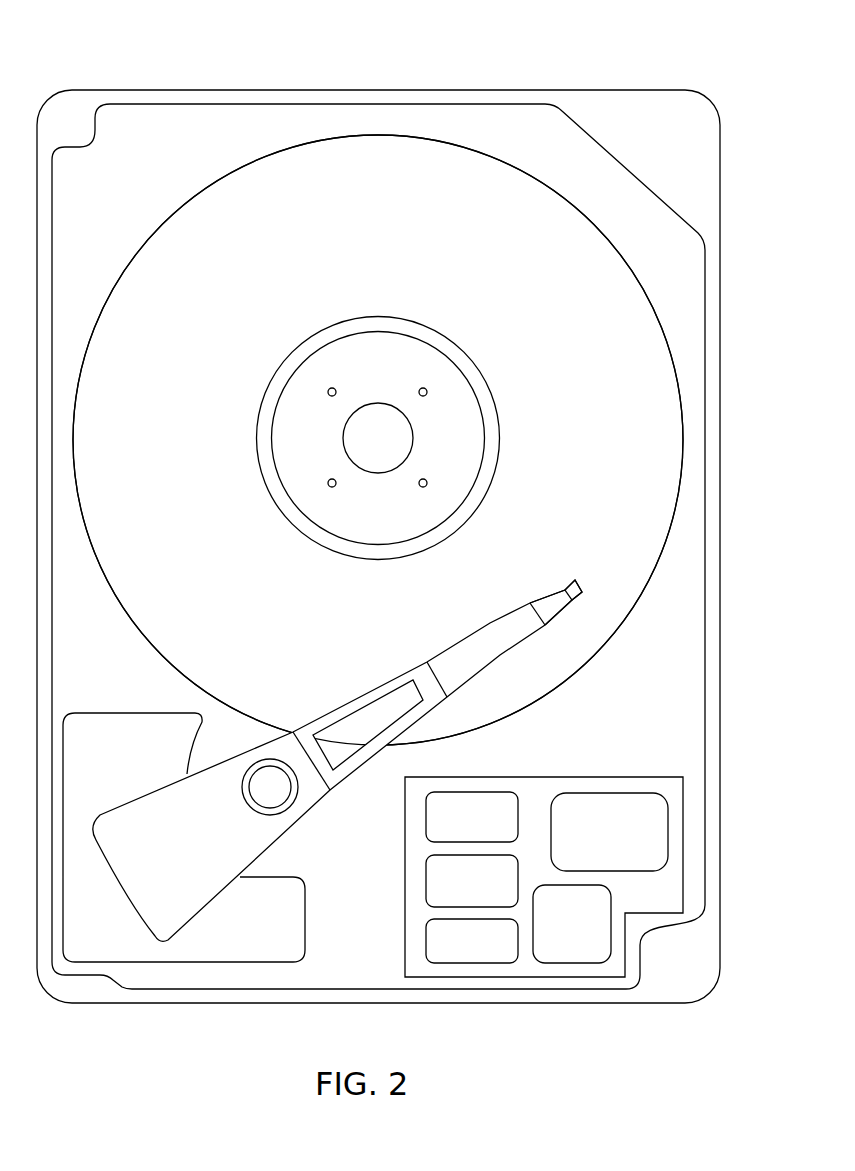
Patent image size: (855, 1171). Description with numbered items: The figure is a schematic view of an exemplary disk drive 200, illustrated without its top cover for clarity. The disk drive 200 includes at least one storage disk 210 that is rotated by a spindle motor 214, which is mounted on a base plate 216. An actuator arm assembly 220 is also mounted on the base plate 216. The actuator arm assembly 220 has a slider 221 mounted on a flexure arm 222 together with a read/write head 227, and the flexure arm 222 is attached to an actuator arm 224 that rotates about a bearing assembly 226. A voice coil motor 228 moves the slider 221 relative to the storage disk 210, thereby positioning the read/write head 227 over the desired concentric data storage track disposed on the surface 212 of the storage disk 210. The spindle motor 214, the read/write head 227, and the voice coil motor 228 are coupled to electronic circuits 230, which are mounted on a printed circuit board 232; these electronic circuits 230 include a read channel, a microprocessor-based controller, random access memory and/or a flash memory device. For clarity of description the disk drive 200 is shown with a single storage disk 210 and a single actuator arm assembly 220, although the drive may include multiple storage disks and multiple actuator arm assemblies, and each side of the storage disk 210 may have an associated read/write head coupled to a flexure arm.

The disk drive 200 is at (128, 55).
The storage disk 210 is at (163, 222).
The surface 212 is at (193, 420).
The spindle motor 214 is at (470, 381).
The base plate 216 is at (705, 573).
The actuator arm assembly 220 is at (378, 538).
The slider 221 is at (543, 595).
The flexure arm 222 is at (447, 647).
The actuator arm 224 is at (380, 680).
The bearing assembly 226 is at (305, 832).
The read/write head 227 is at (577, 581).
The voice coil motor 228 is at (307, 905).
The electronic circuits 230 is at (453, 829).
The printed circuit board 232 is at (617, 777).